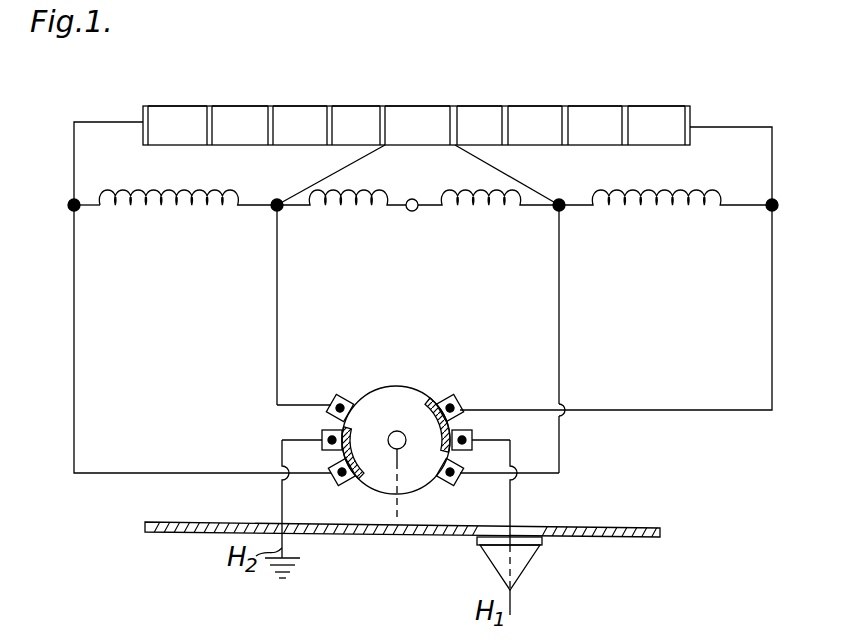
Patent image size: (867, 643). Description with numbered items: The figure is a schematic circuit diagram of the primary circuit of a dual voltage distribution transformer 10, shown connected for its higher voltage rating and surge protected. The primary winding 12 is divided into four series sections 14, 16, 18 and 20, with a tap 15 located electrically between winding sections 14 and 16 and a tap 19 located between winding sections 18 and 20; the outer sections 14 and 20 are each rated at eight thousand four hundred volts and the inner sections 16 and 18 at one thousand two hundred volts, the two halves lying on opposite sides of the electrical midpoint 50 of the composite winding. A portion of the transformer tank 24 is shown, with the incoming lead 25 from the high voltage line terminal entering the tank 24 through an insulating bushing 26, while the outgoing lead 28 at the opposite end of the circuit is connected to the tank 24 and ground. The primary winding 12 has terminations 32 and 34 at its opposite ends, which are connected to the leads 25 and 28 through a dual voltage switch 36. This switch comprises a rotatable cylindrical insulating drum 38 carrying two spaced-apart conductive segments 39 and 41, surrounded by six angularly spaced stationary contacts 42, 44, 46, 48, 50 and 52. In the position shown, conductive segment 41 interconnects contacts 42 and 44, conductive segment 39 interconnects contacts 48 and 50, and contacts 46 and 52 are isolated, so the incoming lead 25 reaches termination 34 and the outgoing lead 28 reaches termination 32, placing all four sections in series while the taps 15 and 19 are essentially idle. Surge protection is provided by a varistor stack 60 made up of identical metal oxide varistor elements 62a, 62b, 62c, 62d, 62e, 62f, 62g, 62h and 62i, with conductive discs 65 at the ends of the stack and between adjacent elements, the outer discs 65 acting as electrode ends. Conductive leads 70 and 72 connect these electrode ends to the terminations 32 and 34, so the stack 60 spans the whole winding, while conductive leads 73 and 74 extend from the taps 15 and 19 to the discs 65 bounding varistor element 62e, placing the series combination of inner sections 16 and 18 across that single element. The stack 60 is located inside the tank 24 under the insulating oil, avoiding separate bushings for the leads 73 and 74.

The dual voltage distribution transformer 10 is at (238, 441).
The primary winding 12 is at (116, 222).
The winding section 14 is at (182, 214).
The tap 15 is at (275, 214).
The winding section 16 is at (353, 214).
The winding section 18 is at (516, 214).
The tap 19 is at (562, 213).
The winding section 20 is at (692, 214).
The transformer tank 24 is at (421, 537).
The incoming lead 25 is at (512, 504).
The insulating bushing 26 is at (520, 566).
The outgoing lead 28 is at (281, 505).
The termination 32 is at (72, 215).
The termination 34 is at (776, 210).
The dual voltage switch 36 is at (396, 432).
The rotatable cylindrical insulating drum 38 is at (394, 386).
The conductive segment 39 is at (358, 462).
The conductive segment 41 is at (440, 440).
The stationary contact 42 is at (451, 400).
The stationary contact 44 is at (472, 440).
The stationary contact 46 is at (454, 483).
The stationary contact 48 is at (341, 483).
The stationary contact 50 is at (413, 211).
The stationary contact 52 is at (341, 398).
The varistor stack 60 is at (155, 92).
The metal oxide varistor element 62a is at (176, 114).
The metal oxide varistor element 62b is at (231, 114).
The metal oxide varistor element 62c is at (294, 114).
The metal oxide varistor element 62d is at (352, 114).
The metal oxide varistor element 62e is at (409, 114).
The metal oxide varistor element 62f is at (469, 114).
The metal oxide varistor element 62g is at (530, 114).
The metal oxide varistor element 62h is at (595, 114).
The metal oxide varistor element 62i is at (653, 114).
The conductive discs 65 is at (143, 134).
The conductive lead 70 is at (74, 152).
The conductive lead 72 is at (718, 127).
The conductive lead 73 is at (342, 170).
The conductive lead 74 is at (496, 166).